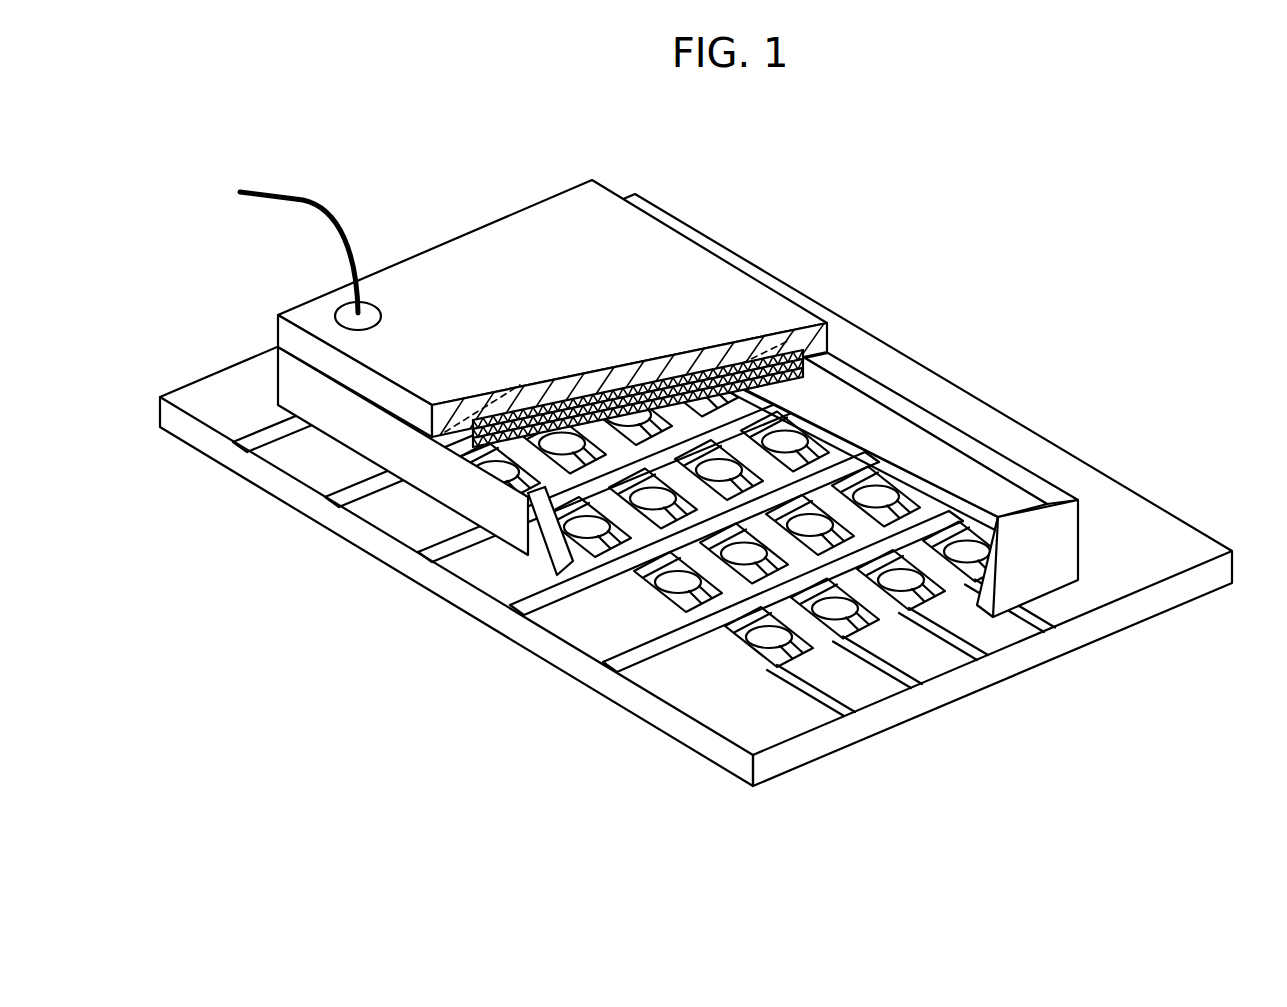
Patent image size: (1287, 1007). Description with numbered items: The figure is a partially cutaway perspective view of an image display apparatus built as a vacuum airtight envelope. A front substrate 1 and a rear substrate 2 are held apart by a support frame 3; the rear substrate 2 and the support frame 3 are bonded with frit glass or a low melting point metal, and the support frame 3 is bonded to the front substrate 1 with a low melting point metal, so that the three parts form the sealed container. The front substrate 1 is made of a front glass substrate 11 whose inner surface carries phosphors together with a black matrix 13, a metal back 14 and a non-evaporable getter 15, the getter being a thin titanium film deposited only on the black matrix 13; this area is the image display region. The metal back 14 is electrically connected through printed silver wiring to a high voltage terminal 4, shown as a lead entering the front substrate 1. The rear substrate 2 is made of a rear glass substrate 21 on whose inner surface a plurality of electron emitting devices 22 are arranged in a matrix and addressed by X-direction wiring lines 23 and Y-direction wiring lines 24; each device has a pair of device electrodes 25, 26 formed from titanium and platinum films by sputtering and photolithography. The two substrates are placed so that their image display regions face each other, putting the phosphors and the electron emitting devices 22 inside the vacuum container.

The front substrate 1 is at (587, 336).
The rear substrate 2 is at (1183, 592).
The support frame 3 is at (1003, 467).
The high voltage terminal 4 is at (294, 198).
The front glass substrate 11 is at (625, 372).
The black matrix 13 is at (668, 381).
The metal back 14 is at (720, 381).
The non-evaporable getter 15 is at (765, 380).
The rear glass substrate 21 is at (737, 725).
The electron emitting device 22 is at (940, 603).
The X-direction wiring line 23 is at (838, 660).
The Y-direction wiring line 24 is at (670, 640).
The device electrode 25 is at (805, 648).
The device electrode 26 is at (775, 655).